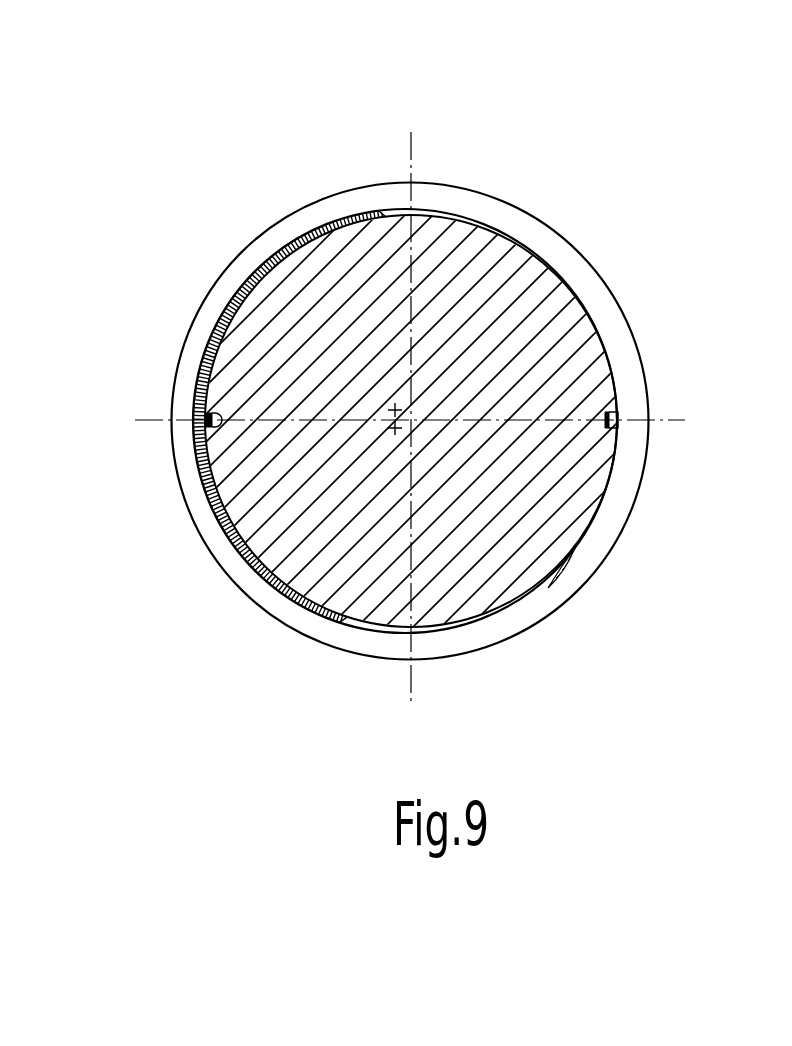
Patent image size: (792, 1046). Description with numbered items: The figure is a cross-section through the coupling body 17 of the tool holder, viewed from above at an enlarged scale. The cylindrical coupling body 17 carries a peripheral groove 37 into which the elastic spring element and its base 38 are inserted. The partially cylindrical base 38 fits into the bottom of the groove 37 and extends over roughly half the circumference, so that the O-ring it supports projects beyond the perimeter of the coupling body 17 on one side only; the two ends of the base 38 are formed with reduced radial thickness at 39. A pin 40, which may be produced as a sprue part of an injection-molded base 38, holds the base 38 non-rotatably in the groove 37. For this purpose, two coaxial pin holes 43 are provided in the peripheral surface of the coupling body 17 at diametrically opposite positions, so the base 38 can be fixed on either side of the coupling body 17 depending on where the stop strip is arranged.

The coupling body 17 is at (287, 547).
The peripheral groove 37 is at (587, 558).
The base 38 is at (220, 513).
The ends of reduced radial thickness 39 is at (333, 218).
The pin 40 is at (204, 390).
The pin holes 43 is at (617, 393).